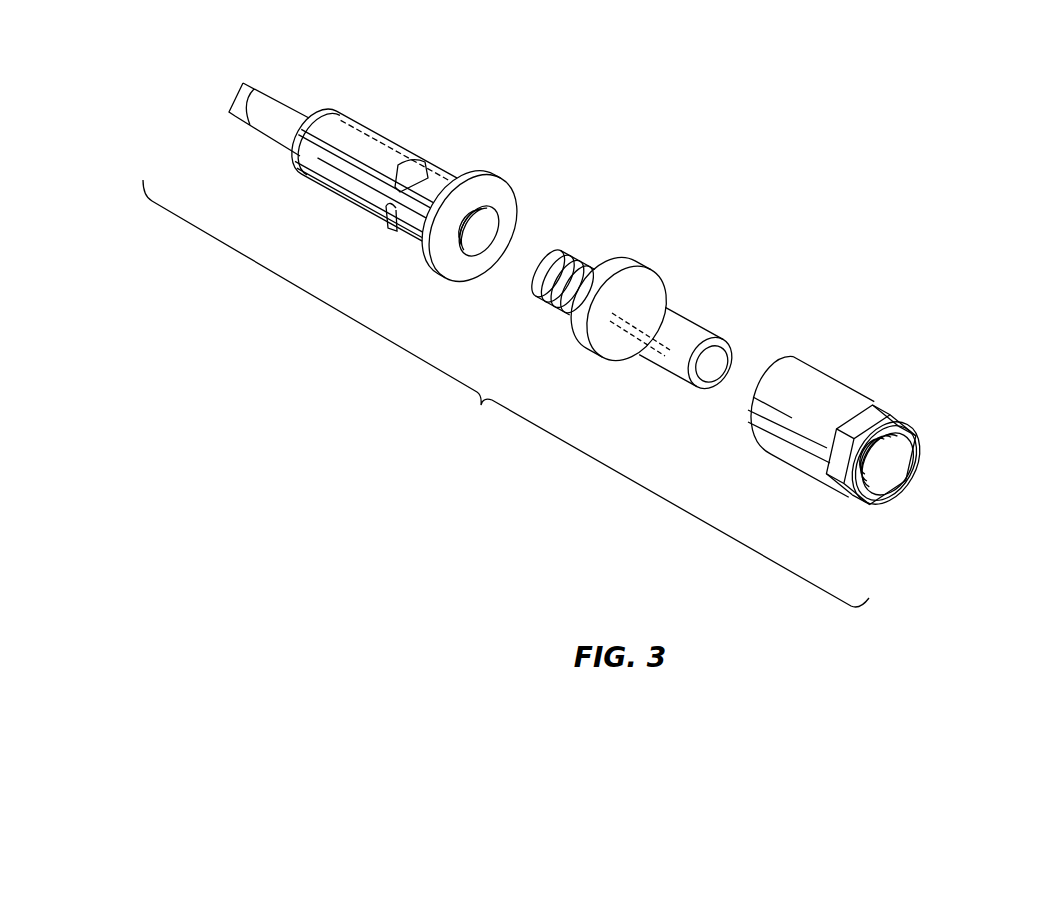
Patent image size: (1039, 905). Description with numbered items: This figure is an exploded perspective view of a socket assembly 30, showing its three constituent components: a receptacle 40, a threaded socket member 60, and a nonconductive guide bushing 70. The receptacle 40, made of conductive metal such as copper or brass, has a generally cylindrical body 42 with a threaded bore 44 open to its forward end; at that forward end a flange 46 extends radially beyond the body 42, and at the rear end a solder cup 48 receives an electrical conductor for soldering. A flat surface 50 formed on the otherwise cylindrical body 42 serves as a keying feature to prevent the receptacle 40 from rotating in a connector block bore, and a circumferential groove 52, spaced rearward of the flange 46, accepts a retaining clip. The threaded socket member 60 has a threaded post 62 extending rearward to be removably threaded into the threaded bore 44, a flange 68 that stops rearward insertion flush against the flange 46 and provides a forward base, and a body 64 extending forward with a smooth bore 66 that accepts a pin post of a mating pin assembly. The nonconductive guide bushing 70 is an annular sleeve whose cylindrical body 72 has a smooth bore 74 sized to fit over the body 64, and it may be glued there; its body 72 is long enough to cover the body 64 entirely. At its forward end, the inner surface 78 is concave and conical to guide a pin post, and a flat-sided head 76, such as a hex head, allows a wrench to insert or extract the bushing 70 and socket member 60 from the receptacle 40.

The socket assembly 30 is at (506, 393).
The receptacle 40 is at (422, 90).
The body 42 is at (390, 140).
The threaded bore 44 is at (490, 233).
The flange 46 is at (495, 197).
The solder cup 48 is at (249, 97).
The flat surface 50 is at (333, 174).
The circumferential groove 52 is at (393, 208).
The threaded socket member 60 is at (706, 260).
The threaded post 62 is at (545, 302).
The body 64 is at (663, 358).
The smooth bore 66 is at (716, 357).
The flange 68 is at (582, 333).
The nonconductive guide bushing 70 is at (896, 340).
The cylindrical body 72 is at (828, 385).
The smooth bore 74 is at (900, 459).
The flat-sided head 76 is at (862, 432).
The inner surface 78 is at (884, 483).